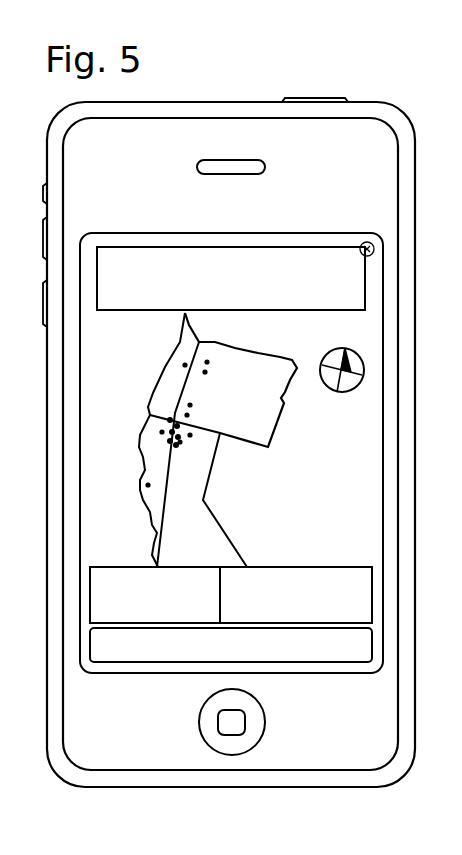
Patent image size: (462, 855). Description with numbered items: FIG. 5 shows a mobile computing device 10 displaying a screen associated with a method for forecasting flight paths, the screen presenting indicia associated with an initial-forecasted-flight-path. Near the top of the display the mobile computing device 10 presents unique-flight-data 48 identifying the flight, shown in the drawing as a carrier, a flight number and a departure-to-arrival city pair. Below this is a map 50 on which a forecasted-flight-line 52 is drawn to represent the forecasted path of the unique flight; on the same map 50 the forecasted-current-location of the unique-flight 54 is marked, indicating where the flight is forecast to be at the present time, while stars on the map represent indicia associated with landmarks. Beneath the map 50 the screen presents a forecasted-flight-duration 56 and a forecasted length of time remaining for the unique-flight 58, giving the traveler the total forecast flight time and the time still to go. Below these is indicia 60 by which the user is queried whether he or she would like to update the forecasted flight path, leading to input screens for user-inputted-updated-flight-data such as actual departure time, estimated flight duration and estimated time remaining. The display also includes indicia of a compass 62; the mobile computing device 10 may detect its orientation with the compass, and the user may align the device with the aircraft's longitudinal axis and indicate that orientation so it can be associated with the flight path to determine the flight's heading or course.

The mobile computing device 10 is at (240, 102).
The unique-flight-data 48 is at (252, 247).
The map 50 is at (143, 364).
The forecasted-flight-line 52 is at (167, 462).
The forecasted-current-location of the unique-flight 54 is at (172, 433).
The forecasted-flight-duration 56 is at (125, 567).
The forecasted length of time remaining for the unique-flight 58 is at (309, 567).
The indicia querying update of the forecasted flight path 60 is at (345, 665).
The compass 62 is at (345, 392).